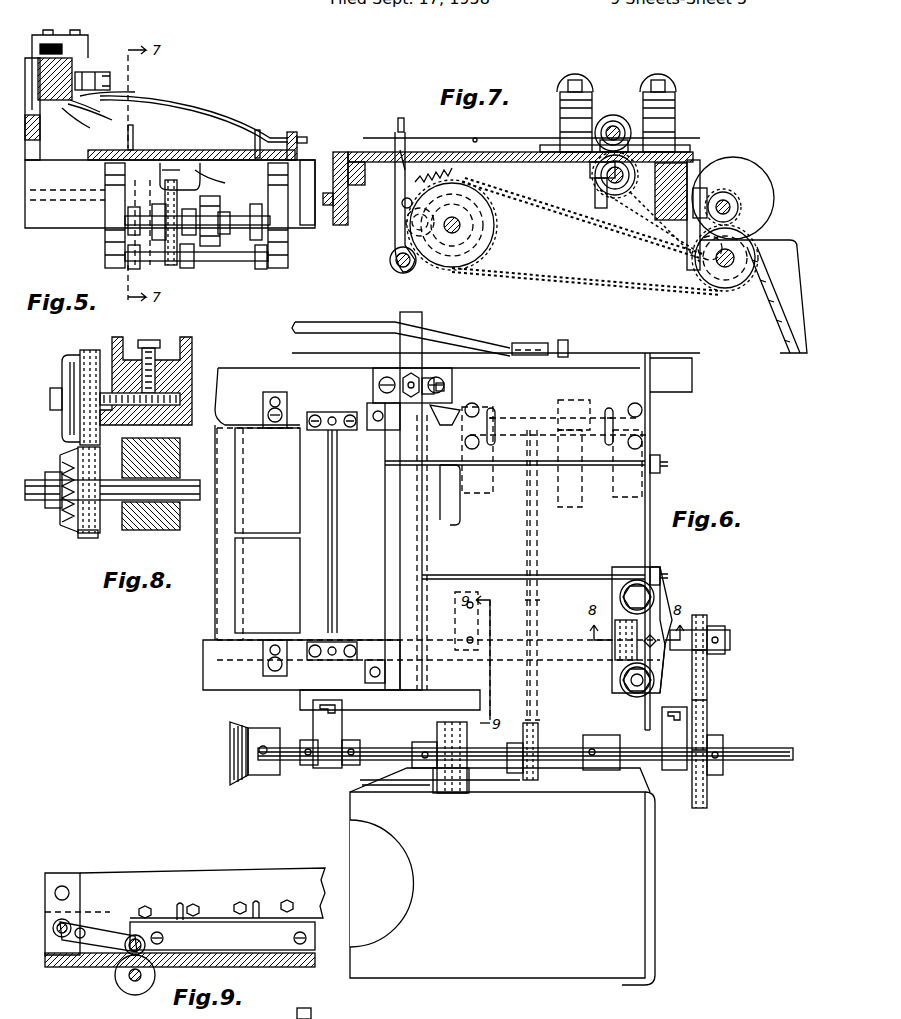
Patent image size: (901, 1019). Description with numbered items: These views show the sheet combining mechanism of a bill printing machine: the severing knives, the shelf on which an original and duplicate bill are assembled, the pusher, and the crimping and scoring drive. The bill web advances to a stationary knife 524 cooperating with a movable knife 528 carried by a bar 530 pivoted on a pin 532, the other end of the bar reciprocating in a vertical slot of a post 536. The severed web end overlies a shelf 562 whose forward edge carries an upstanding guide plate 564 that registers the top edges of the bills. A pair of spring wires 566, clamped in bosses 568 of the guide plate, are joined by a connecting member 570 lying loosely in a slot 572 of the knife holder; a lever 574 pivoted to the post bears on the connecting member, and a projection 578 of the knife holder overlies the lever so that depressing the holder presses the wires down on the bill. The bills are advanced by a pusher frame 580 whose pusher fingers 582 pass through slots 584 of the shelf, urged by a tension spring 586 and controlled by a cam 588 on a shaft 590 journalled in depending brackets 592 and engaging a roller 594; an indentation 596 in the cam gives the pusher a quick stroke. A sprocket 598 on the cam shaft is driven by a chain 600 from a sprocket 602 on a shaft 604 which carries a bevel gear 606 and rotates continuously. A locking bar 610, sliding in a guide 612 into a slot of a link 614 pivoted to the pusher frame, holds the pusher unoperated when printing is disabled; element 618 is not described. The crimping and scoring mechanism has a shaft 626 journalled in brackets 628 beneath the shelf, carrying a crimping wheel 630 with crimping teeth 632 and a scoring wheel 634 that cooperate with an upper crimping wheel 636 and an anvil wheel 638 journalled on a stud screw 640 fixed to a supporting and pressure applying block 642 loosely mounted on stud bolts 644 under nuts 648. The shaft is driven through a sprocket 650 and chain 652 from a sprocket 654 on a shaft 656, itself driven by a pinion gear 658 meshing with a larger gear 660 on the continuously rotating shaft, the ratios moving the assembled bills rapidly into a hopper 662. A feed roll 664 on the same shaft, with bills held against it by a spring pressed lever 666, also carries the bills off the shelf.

In FIG. 5, the stationary knife 524 is at (38, 138).
In FIG. 9, the stationary knife 524 is at (315, 935).
In FIG. 5, the movable knife 528 is at (90, 127).
In FIG. 5, the bar 530 is at (90, 52).
In FIG. 9, the bar 530 is at (187, 878).
In FIG. 9, the pin 532 is at (64, 885).
In FIG. 5, the post 536 is at (88, 56).
In FIG. 5, the shelf 562 is at (190, 148).
In FIG. 7, the shelf 562 is at (375, 150).
In FIG. 6, the shelf 562 is at (610, 548).
In FIG. 9, the shelf 562 is at (297, 965).
In FIG. 5, the upstanding guide plate 564 is at (292, 130).
In FIG. 7, the upstanding guide plate 564 is at (508, 137).
In FIG. 6, the upstanding guide plate 564 is at (652, 497).
In FIG. 5, the spring wires 566 is at (190, 103).
In FIG. 7, the spring wires 566 is at (474, 137).
In FIG. 6, the spring wires 566 is at (604, 466).
In FIG. 5, the bosses 568 is at (302, 134).
In FIG. 6, the bosses 568 is at (660, 462).
In FIG. 5, the connecting member 570 is at (128, 111).
In FIG. 6, the connecting member 570 is at (452, 525).
In FIG. 5, the slot 572 is at (98, 109).
In FIG. 9, the slot 572 is at (177, 906).
In FIG. 5, the lever 574 is at (134, 93).
In FIG. 6, the lever 574 is at (455, 468).
In FIG. 5, the projection 578 is at (96, 75).
In FIG. 6, the projection 578 is at (456, 415).
In FIG. 5, the pusher frame 580 is at (207, 178).
In FIG. 7, the pusher frame 580 is at (390, 264).
In FIG. 6, the pusher frame 580 is at (545, 420).
In FIG. 5, the pusher fingers 582 is at (134, 138).
In FIG. 7, the pusher fingers 582 is at (401, 128).
In FIG. 6, the pusher fingers 582 is at (495, 422).
In FIG. 7, the slots 584 is at (420, 152).
In FIG. 6, the slots 584 is at (493, 440).
In FIG. 7, the tension spring 586 is at (455, 175).
In FIG. 5, the cam 588 is at (208, 246).
In FIG. 7, the cam 588 is at (480, 235).
In FIG. 6, the cam 588 is at (575, 510).
In FIG. 5, the shaft 590 is at (240, 222).
In FIG. 7, the shaft 590 is at (448, 240).
In FIG. 6, the shaft 590 is at (615, 490).
In FIG. 5, the depending brackets 592 is at (105, 256).
In FIG. 7, the depending brackets 592 is at (397, 240).
In FIG. 5, the roller 594 is at (226, 212).
In FIG. 7, the roller 594 is at (400, 222).
In FIG. 6, the roller 594 is at (568, 432).
In FIG. 7, the indentation 596 is at (490, 211).
In FIG. 5, the sprocket 598 is at (174, 268).
In FIG. 7, the sprocket 598 is at (465, 268).
In FIG. 6, the sprocket 598 is at (520, 530).
In FIG. 5, the chain 600 is at (170, 258).
In FIG. 7, the chain 600 is at (565, 278).
In FIG. 6, the chain 600 is at (537, 610).
In FIG. 7, the sprocket 602 is at (700, 285).
In FIG. 6, the sprocket 602 is at (535, 765).
In FIG. 7, the shaft 604 is at (722, 275).
In FIG. 6, the bevel gear 606 is at (230, 735).
In FIG. 5, the locking bar 610 is at (68, 195).
In FIG. 7, the locking bar 610 is at (326, 192).
In FIG. 6, the locking bar 610 is at (348, 320).
In FIG. 6, the guide 612 is at (528, 342).
In FIG. 5, the link 614 is at (176, 164).
In FIG. 7, the link 614 is at (345, 210).
In FIG. 6, the link 614 is at (569, 350).
In FIG. 9, the stop 618 is at (311, 1013).
In FIG. 7, the shaft 626 is at (622, 186).
In FIG. 8, the shaft 626 is at (190, 478).
In FIG. 6, the shaft 626 is at (726, 630).
In FIG. 9, the shaft 626 is at (133, 981).
In FIG. 7, the brackets 628 is at (565, 178).
In FIG. 8, the brackets 628 is at (165, 532).
In FIG. 7, the crimping wheel 630 is at (612, 195).
In FIG. 8, the crimping wheel 630 is at (88, 540).
In FIG. 8, the crimping teeth 632 is at (98, 538).
In FIG. 7, the scoring wheel 634 is at (600, 200).
In FIG. 8, the scoring wheel 634 is at (62, 535).
In FIG. 8, the crimping wheel 636 is at (90, 350).
In FIG. 6, the crimping wheel 636 is at (660, 625).
In FIG. 7, the anvil wheel 638 is at (610, 115).
In FIG. 8, the anvil wheel 638 is at (66, 358).
In FIG. 6, the anvil wheel 638 is at (616, 650).
In FIG. 7, the stud screw 640 is at (618, 128).
In FIG. 8, the stud screw 640 is at (50, 395).
In FIG. 8, the supporting and pressure applying block 642 is at (190, 365).
In FIG. 7, the stud bolts 644 is at (672, 125).
In FIG. 6, the stud bolts 644 is at (625, 593).
In FIG. 7, the nuts 648 is at (560, 95).
In FIG. 6, the nuts 648 is at (630, 697).
In FIG. 7, the sprocket 650 is at (595, 190).
In FIG. 6, the sprocket 650 is at (706, 622).
In FIG. 7, the chain 652 is at (700, 165).
In FIG. 6, the chain 652 is at (707, 672).
In FIG. 7, the sprocket 654 is at (750, 178).
In FIG. 6, the sprocket 654 is at (708, 790).
In FIG. 7, the shaft 656 is at (740, 200).
In FIG. 6, the shaft 656 is at (620, 765).
In FIG. 7, the pinion gear 658 is at (740, 208).
In FIG. 6, the pinion gear 658 is at (450, 760).
In FIG. 7, the gear 660 is at (698, 265).
In FIG. 6, the gear 660 is at (455, 775).
In FIG. 6, the hopper 662 is at (502, 955).
In FIG. 9, the feed roll 664 is at (118, 980).
In FIG. 9, the spring pressed lever 666 is at (97, 930).